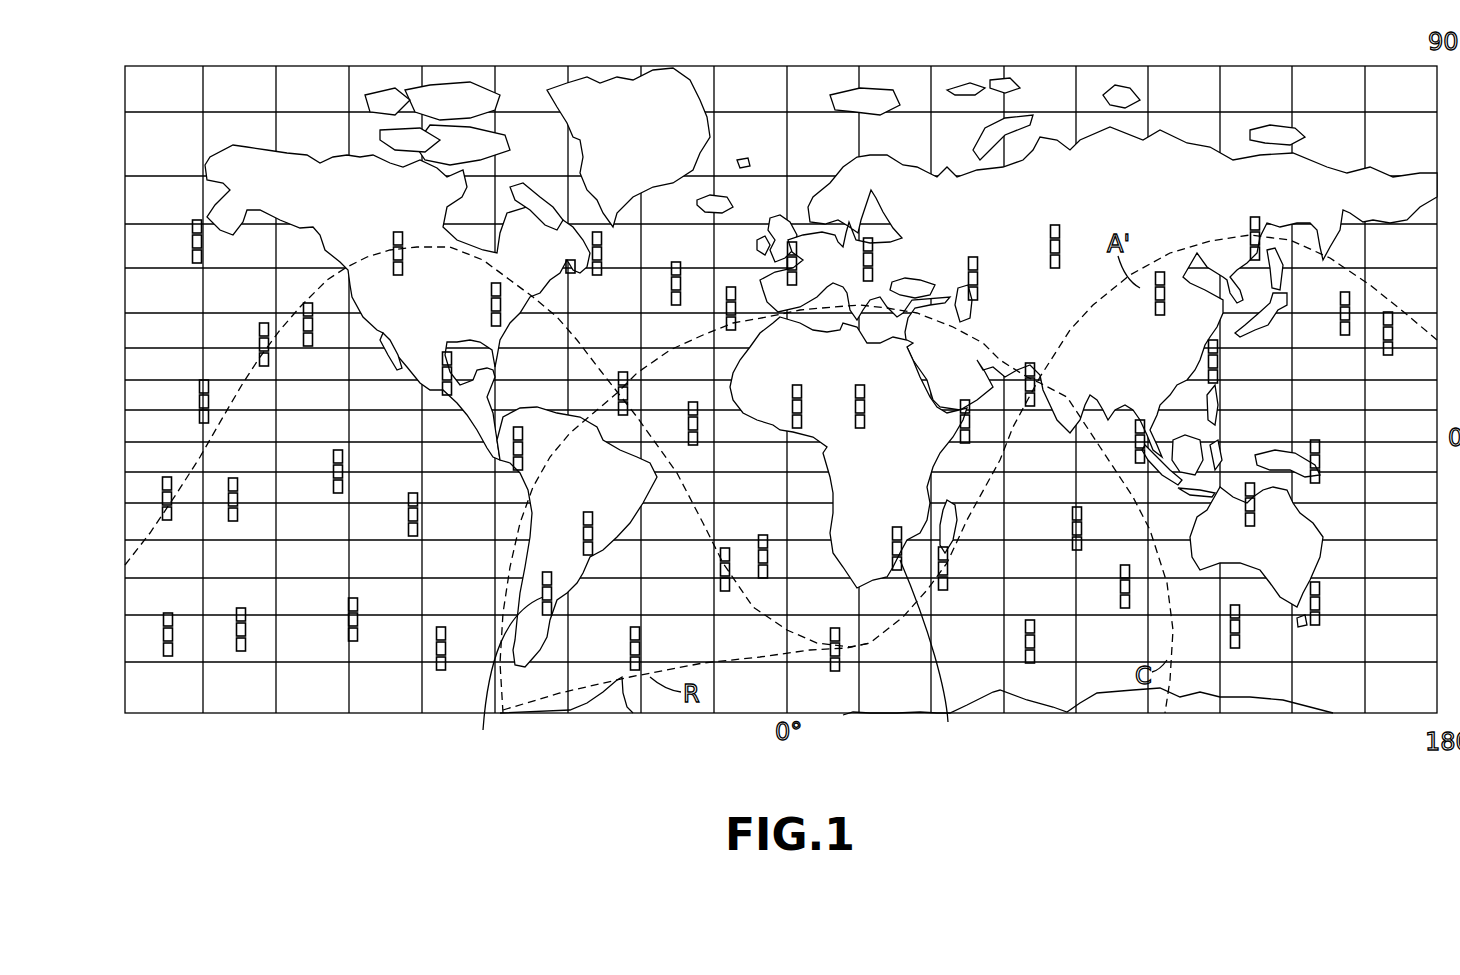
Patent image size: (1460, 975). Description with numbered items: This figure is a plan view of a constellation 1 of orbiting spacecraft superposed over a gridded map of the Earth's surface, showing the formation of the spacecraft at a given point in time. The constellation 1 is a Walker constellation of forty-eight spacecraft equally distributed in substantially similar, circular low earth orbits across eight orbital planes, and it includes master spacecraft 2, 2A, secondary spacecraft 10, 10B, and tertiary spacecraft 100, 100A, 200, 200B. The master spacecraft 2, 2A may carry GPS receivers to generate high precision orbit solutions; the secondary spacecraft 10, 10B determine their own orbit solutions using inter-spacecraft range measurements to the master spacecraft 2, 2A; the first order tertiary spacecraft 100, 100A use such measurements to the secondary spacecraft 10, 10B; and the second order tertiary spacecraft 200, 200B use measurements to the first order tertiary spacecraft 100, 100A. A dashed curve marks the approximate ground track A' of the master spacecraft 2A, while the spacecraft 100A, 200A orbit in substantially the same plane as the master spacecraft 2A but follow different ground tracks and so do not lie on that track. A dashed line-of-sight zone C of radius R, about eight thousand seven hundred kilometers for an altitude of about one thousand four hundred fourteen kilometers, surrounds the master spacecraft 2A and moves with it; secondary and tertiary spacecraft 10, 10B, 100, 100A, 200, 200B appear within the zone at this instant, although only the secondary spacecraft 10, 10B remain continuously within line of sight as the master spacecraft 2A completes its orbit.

The constellation 1 is at (296, 750).
The master spacecraft 2 is at (192, 240).
The master spacecraft 2A is at (842, 648).
The secondary spacecraft 10 is at (690, 400).
The secondary spacecraft 10B is at (645, 650).
The first order tertiary spacecraft 100 is at (950, 575).
The first order tertiary spacecraft 100A is at (962, 430).
The second order tertiary spacecraft 200 is at (603, 252).
The spacecraft 200A is at (162, 477).
The second order tertiary spacecraft 200B is at (499, 678).